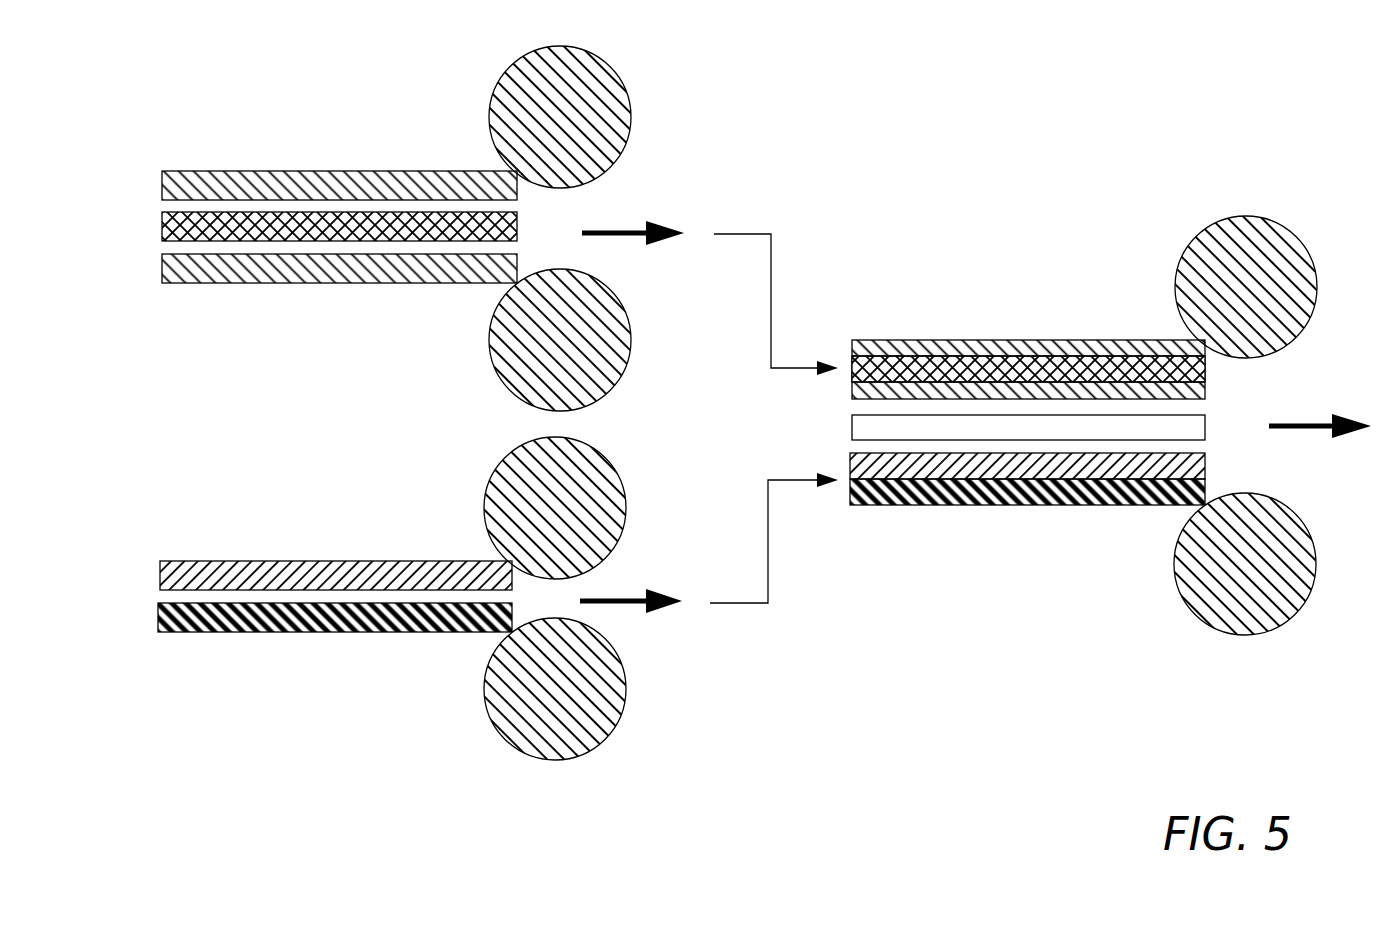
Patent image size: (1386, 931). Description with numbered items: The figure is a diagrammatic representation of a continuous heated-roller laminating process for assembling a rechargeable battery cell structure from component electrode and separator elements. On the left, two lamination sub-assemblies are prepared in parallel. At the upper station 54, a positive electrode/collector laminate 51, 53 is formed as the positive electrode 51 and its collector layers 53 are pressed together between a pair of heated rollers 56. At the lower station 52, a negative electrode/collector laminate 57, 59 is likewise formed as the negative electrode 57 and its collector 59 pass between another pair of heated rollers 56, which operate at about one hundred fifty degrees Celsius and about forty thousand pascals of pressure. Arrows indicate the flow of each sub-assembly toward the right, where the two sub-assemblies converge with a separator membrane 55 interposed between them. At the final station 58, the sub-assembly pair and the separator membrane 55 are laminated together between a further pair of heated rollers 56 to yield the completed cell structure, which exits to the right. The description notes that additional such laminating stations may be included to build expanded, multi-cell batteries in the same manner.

The positive electrode 51 is at (161, 230).
The laminating station 52 is at (335, 641).
The positive collector 53 is at (203, 172).
The laminating station 54 is at (298, 273).
The separator membrane 55 is at (852, 426).
The heated rollers 56 is at (613, 85).
The negative electrode 57 is at (190, 561).
The laminating station 58 is at (987, 489).
The negative collector 59 is at (298, 632).